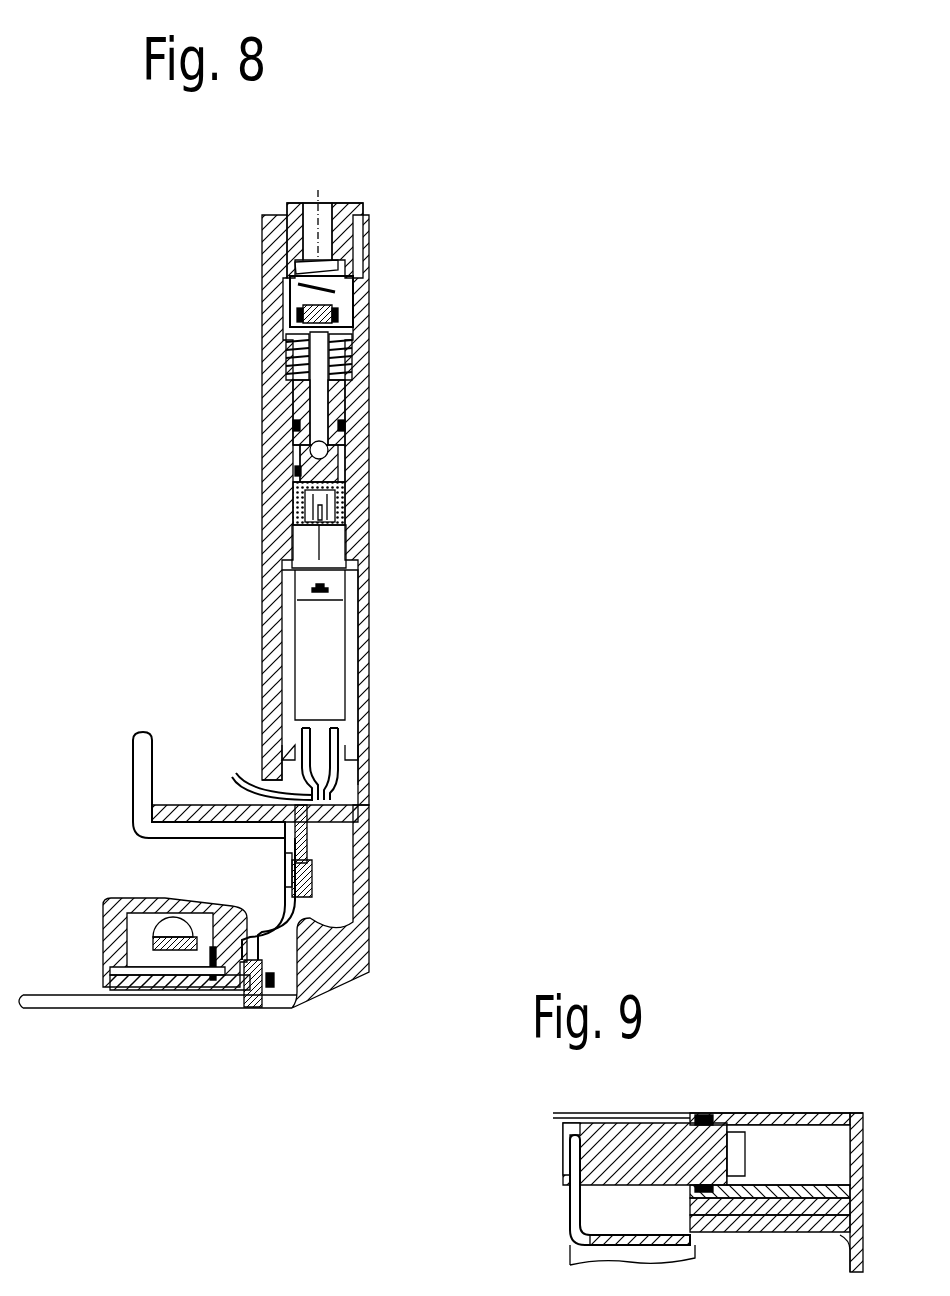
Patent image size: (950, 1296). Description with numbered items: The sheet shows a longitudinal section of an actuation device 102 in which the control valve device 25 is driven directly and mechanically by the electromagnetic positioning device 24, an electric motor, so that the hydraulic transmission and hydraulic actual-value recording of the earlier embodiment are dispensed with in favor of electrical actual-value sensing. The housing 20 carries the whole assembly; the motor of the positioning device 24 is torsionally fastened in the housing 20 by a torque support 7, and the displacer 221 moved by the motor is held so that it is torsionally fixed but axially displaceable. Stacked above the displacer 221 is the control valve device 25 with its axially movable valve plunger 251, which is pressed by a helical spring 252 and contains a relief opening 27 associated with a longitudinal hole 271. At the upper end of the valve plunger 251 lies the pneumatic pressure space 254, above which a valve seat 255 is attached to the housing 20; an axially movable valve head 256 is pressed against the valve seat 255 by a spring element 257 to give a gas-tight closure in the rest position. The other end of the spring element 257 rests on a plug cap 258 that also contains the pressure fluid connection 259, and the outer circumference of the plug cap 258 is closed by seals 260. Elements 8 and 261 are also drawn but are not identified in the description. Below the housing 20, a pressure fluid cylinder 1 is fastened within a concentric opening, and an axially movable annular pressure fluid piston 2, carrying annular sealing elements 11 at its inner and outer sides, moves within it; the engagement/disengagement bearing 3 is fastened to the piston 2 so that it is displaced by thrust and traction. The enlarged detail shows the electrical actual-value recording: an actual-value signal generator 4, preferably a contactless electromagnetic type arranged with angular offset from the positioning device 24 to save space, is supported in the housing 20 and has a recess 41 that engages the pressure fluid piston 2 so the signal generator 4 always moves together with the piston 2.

In FIG. 8, the pressure fluid cylinder 1 is at (192, 810).
In FIG. 9, the pressure fluid cylinder 1 is at (857, 1250).
In FIG. 8, the pressure fluid piston 2 is at (152, 745).
In FIG. 9, the pressure fluid piston 2 is at (572, 1220).
In FIG. 8, the engagement/disengagement bearing 3 is at (85, 920).
In FIG. 9, the actual-value signal generator 4 is at (563, 1128).
In FIG. 8, the torque support 7 is at (348, 545).
In FIG. 8, the contact pin 8 is at (320, 538).
In FIG. 8, the annular sealing elements 11 is at (310, 838).
In FIG. 8, the housing 20 is at (275, 504).
In FIG. 8, the electromagnetic positioning device 24 is at (323, 672).
In FIG. 8, the control valve device 25 is at (383, 250).
In FIG. 8, the relief opening 27 is at (330, 460).
In FIG. 9, the recess 41 is at (568, 1160).
In FIG. 8, the actuation device 102 is at (520, 180).
In FIG. 8, the displacer 221 is at (346, 510).
In FIG. 8, the valve plunger 251 is at (346, 395).
In FIG. 8, the helical spring 252 is at (350, 350).
In FIG. 8, the pneumatic pressure space 254 is at (288, 350).
In FIG. 8, the valve seat 255 is at (352, 305).
In FIG. 8, the valve head 256 is at (352, 278).
In FIG. 8, the spring element 257 is at (296, 290).
In FIG. 8, the plug cap 258 is at (288, 215).
In FIG. 8, the pressure fluid connection 259 is at (328, 188).
In FIG. 8, the seals 260 is at (296, 462).
In FIG. 8, the contact springs 261 is at (330, 770).
In FIG. 8, the longitudinal hole 271 is at (328, 400).